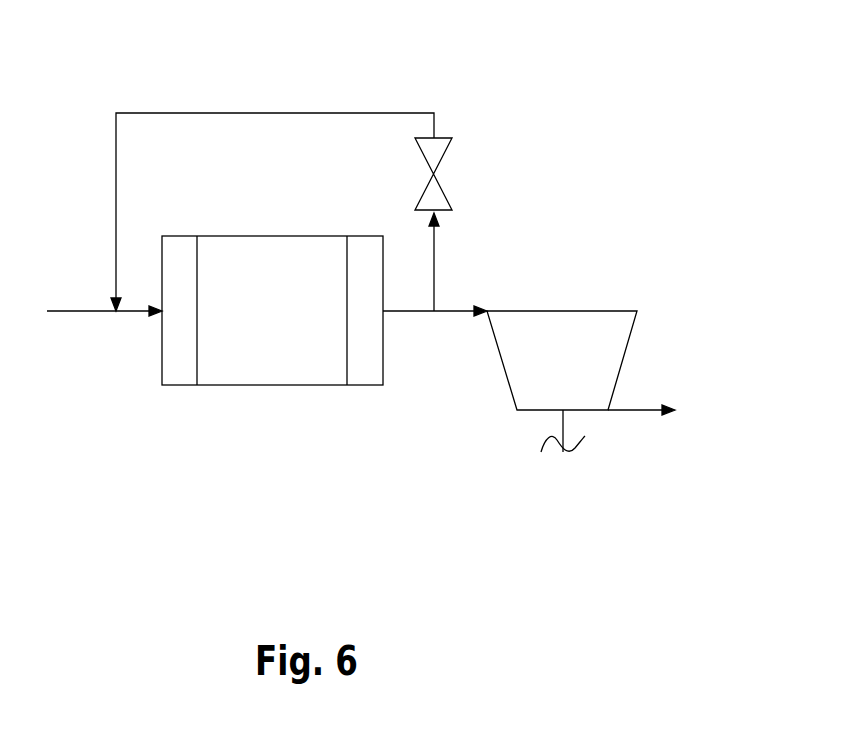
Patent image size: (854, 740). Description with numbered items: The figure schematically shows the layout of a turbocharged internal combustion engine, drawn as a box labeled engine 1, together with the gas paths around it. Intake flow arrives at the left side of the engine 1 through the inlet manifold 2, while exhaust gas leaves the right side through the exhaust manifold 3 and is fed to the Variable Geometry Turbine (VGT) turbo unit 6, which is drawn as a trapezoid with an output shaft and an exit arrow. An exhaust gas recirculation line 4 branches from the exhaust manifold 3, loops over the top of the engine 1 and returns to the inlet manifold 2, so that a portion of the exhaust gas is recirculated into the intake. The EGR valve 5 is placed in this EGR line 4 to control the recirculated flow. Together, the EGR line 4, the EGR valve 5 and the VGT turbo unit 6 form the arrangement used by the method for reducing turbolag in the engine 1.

The engine 1 is at (302, 385).
The inlet manifold 2 is at (161, 355).
The exhaust manifold 3 is at (383, 355).
The exhaust gas recirculation (EGR) line 4 is at (377, 112).
The EGR valve 5 is at (438, 157).
The Variable Geometry Turbine (VGT) turbo unit 6 is at (613, 311).